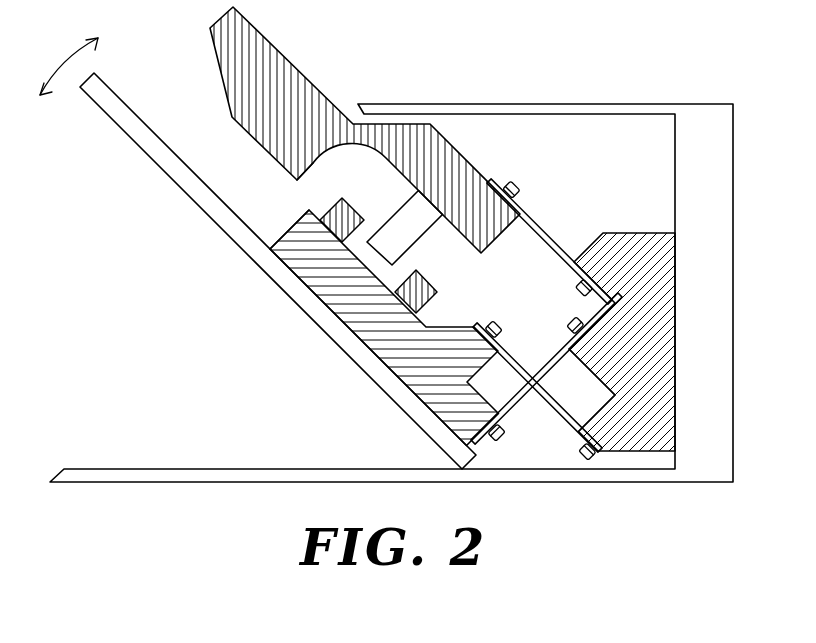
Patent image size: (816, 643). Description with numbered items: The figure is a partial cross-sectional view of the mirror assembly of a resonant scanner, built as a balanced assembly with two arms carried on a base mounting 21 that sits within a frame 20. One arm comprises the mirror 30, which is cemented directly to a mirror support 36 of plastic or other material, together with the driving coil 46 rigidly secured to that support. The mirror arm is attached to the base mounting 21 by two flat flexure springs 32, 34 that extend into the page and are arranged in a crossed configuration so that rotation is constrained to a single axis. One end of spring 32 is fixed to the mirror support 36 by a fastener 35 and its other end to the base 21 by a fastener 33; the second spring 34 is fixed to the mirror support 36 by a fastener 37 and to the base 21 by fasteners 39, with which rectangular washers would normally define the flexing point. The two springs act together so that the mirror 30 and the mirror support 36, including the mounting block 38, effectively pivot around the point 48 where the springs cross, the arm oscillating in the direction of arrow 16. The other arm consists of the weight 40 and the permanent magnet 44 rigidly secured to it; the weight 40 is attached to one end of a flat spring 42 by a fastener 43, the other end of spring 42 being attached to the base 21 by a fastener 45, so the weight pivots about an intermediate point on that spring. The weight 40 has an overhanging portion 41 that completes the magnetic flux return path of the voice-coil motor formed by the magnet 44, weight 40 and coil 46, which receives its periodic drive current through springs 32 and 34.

The arrow 16 is at (73, 56).
The frame 20 is at (707, 218).
The base mounting 21 is at (652, 240).
The mirror 30 is at (182, 178).
The flexure spring 32 is at (553, 362).
The fastener 33 is at (570, 317).
The second spring 34 is at (560, 415).
The fastener 35 is at (498, 438).
The mirror support 36 is at (293, 223).
The fastener 37 is at (492, 323).
The mirror mounting block 38 is at (440, 322).
The fasteners 39 is at (577, 447).
The weight 40 is at (277, 73).
The overhanging portion 41 is at (297, 155).
The spring 42 is at (543, 222).
The fastener 43 is at (523, 187).
The permanent magnet 44 is at (417, 228).
The fastener 45 is at (578, 283).
The driving coil 46 is at (348, 213).
The point 48 is at (540, 378).